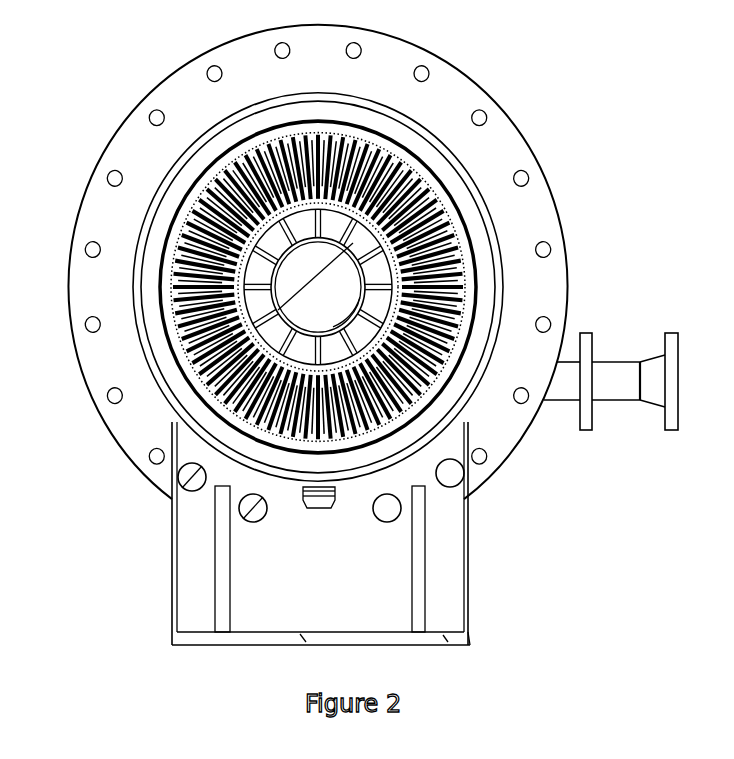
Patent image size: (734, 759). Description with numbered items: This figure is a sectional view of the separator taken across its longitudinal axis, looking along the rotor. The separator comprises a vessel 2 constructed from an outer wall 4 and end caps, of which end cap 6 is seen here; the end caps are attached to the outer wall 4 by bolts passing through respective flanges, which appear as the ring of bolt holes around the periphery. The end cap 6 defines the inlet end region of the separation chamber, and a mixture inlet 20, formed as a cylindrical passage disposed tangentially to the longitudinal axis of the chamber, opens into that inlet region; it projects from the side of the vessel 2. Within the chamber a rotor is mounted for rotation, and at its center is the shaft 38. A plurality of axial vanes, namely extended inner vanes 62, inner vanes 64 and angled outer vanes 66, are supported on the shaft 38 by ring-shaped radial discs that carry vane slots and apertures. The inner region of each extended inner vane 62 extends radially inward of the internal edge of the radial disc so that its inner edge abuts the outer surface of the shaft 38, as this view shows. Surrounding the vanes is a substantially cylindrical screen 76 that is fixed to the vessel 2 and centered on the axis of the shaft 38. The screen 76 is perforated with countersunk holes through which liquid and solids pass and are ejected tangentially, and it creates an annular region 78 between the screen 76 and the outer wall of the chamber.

The vessel 2 is at (317, 262).
The outer wall 4 is at (318, 287).
The end cap 6 is at (318, 255).
The mixture inlet 20 is at (615, 383).
The shaft 38 is at (318, 287).
The extended inner vane 62 is at (318, 287).
The inner vane 64 is at (318, 286).
The angled outer vane 66 is at (318, 287).
The screen 76 is at (318, 287).
The annular region 78 is at (318, 287).